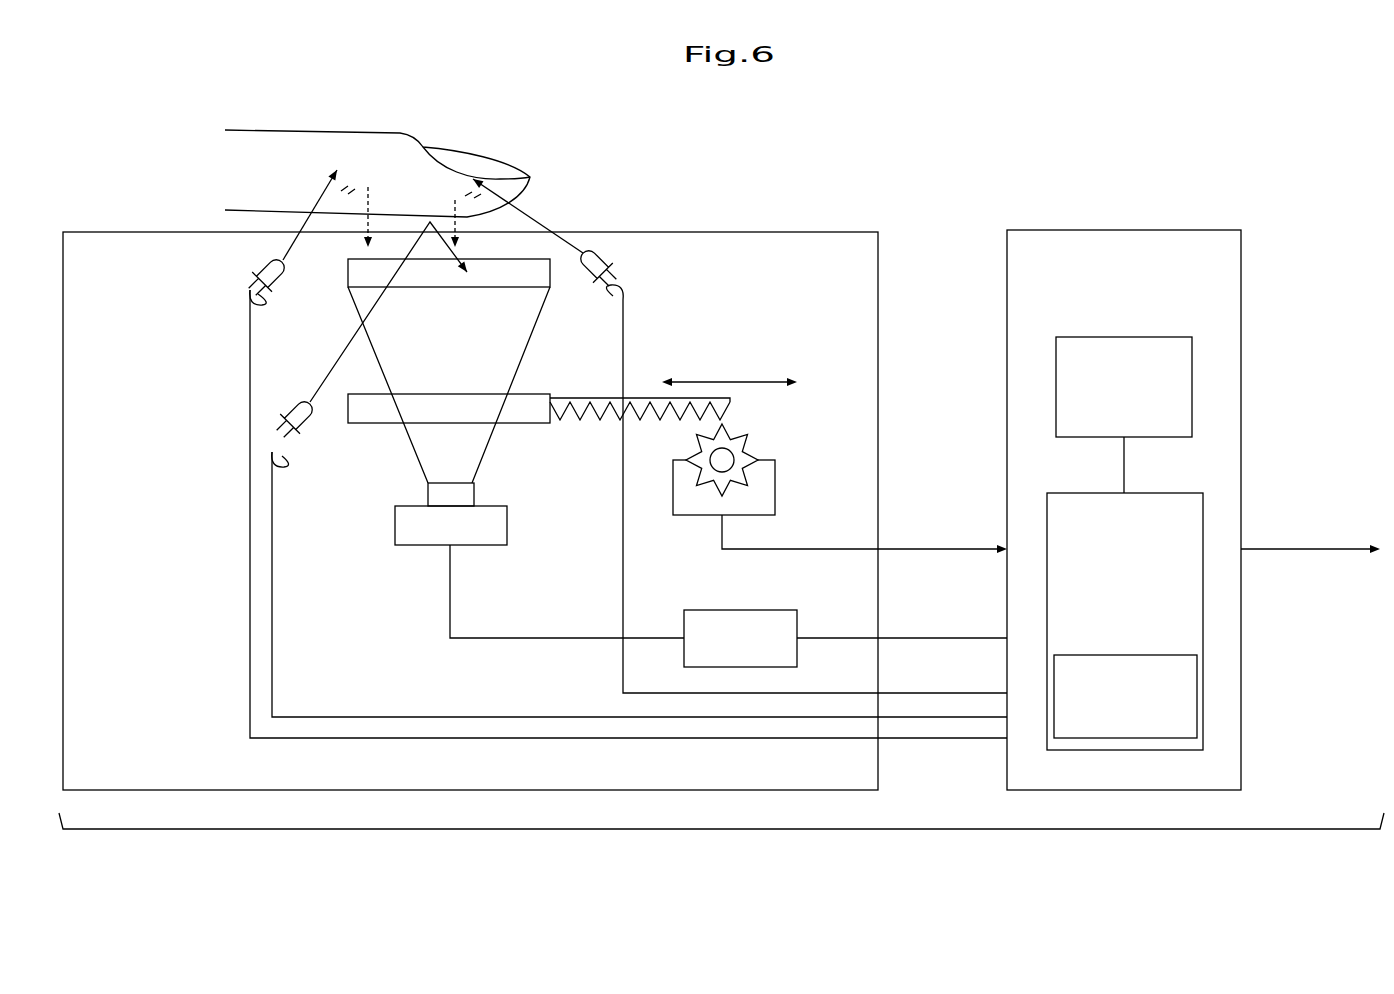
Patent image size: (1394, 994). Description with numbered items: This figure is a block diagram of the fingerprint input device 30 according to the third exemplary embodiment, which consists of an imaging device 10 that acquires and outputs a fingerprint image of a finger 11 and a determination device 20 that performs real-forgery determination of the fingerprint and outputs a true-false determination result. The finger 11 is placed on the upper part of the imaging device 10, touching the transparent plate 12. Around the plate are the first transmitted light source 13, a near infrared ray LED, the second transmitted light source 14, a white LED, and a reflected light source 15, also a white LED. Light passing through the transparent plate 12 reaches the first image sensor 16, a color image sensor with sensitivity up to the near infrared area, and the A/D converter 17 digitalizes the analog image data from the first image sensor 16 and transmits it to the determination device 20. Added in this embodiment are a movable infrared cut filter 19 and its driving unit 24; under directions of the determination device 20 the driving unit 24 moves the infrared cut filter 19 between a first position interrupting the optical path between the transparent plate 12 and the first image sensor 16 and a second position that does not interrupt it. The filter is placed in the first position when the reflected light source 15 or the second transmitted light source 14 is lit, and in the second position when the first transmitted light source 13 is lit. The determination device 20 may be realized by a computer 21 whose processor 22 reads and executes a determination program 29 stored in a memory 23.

The imaging device 10 is at (668, 228).
The finger 11 is at (297, 130).
The transparent plate 12 is at (428, 289).
The first transmitted light source 13 is at (243, 270).
The second transmitted light source 14 is at (622, 262).
The reflected light source 15 is at (305, 450).
The first image sensor 16 is at (508, 525).
The A/D converter 17 is at (757, 610).
The infrared cut filter 19 is at (500, 425).
The determination device 20 is at (1200, 475).
The computer 21 is at (1040, 232).
The processor 22 is at (1148, 337).
The memory 23 is at (1152, 491).
The driving unit 24 is at (778, 477).
The determination program 29 is at (1120, 654).
The fingerprint input device 30 is at (668, 829).